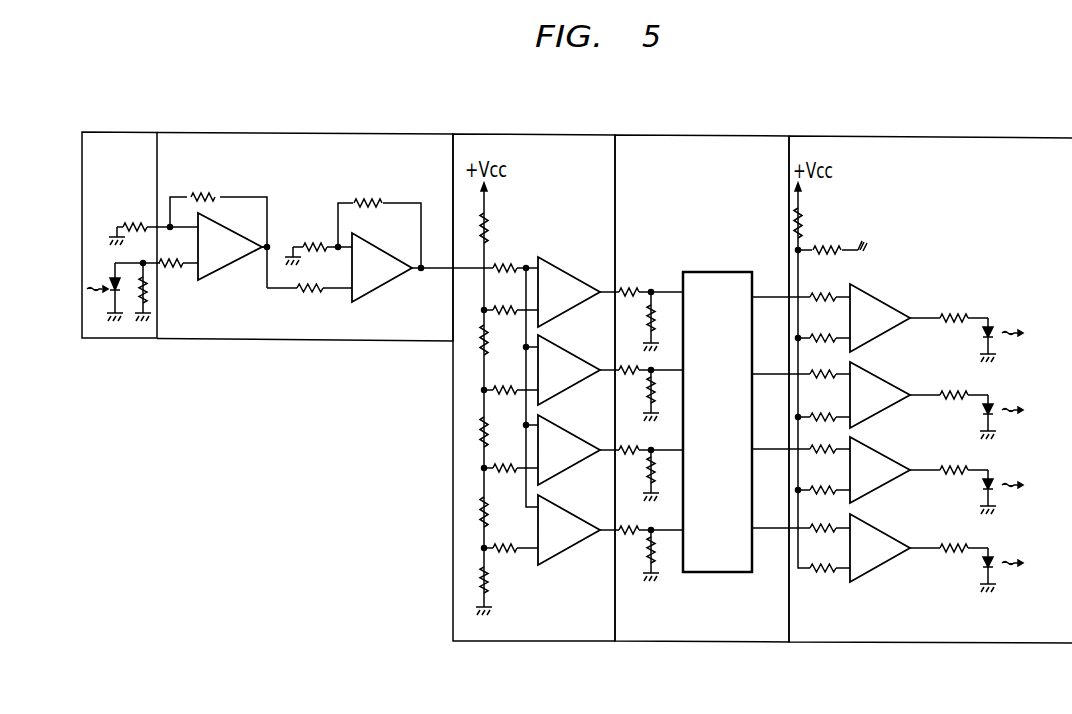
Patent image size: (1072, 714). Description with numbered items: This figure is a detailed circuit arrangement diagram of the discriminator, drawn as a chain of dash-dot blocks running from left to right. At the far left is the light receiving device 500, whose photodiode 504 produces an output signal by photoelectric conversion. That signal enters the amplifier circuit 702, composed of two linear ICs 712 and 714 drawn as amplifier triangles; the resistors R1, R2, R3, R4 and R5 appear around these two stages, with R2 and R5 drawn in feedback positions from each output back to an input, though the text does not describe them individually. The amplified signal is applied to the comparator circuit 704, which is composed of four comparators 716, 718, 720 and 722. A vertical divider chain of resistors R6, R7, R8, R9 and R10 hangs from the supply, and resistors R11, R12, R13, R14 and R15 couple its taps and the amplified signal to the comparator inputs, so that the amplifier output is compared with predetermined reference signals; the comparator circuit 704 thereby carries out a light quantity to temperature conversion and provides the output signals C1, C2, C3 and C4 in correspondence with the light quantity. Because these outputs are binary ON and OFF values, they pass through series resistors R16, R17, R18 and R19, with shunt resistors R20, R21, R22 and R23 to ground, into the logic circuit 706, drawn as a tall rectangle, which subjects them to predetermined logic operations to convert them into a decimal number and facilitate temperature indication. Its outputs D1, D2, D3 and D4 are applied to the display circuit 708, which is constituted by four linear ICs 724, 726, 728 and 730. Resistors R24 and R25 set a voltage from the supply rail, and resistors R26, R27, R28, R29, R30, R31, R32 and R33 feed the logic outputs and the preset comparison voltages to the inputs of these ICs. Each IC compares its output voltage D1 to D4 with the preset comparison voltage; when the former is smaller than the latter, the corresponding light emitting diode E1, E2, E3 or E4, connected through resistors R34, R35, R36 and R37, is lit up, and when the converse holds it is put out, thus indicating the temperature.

The light receiving device 500 is at (113, 132).
The photodiode 504 is at (113, 284).
The amplifier circuit 702 is at (342, 132).
The comparator circuit 704 is at (553, 133).
The logic circuit 706 is at (708, 133).
The display circuit 708 is at (939, 137).
The linear IC 712 is at (220, 269).
The linear IC 714 is at (366, 292).
The comparator 716 is at (568, 271).
The comparator 718 is at (575, 354).
The comparator 720 is at (572, 431).
The comparator 722 is at (570, 512).
The linear IC 724 is at (880, 300).
The linear IC 726 is at (874, 385).
The linear IC 728 is at (867, 457).
The linear IC 730 is at (871, 539).
The resistor R1 is at (169, 268).
The feedback resistor R2 is at (196, 193).
The resistor R3 is at (305, 294).
The resistor R4 is at (318, 240).
The feedback resistor R5 is at (365, 193).
The divider resistor R6 is at (489, 213).
The divider resistor R7 is at (480, 342).
The divider resistor R8 is at (480, 430).
The divider resistor R9 is at (480, 510).
The divider resistor R10 is at (478, 574).
The input resistor R11 is at (505, 265).
The input resistor R12 is at (504, 307).
The input resistor R13 is at (504, 386).
The input resistor R14 is at (506, 463).
The input resistor R15 is at (506, 543).
The series resistor R16 is at (629, 285).
The series resistor R17 is at (626, 365).
The series resistor R18 is at (626, 445).
The series resistor R19 is at (626, 525).
The shunt resistor R20 is at (656, 304).
The shunt resistor R21 is at (654, 400).
The shunt resistor R22 is at (654, 456).
The shunt resistor R23 is at (656, 551).
The bias resistor R24 is at (802, 210).
The bias resistor R25 is at (822, 245).
The input resistor R26 is at (815, 293).
The input resistor R27 is at (809, 335).
The input resistor R28 is at (809, 372).
The input resistor R29 is at (809, 413).
The input resistor R30 is at (812, 441).
The input resistor R31 is at (809, 488).
The input resistor R32 is at (809, 526).
The input resistor R33 is at (809, 566).
The output resistor R34 is at (953, 315).
The output resistor R35 is at (946, 392).
The output resistor R36 is at (944, 467).
The output resistor R37 is at (950, 545).
The comparator output signal C1 is at (602, 289).
The comparator output signal C2 is at (601, 368).
The comparator output signal C3 is at (599, 448).
The comparator output signal C4 is at (601, 528).
The logic circuit output signal D1 is at (768, 296).
The logic circuit output signal D2 is at (768, 373).
The logic circuit output signal D3 is at (768, 448).
The logic circuit output signal D4 is at (768, 527).
The light emitting diode E1 is at (1018, 340).
The light emitting diode E2 is at (1019, 417).
The light emitting diode E3 is at (1020, 492).
The light emitting diode E4 is at (1019, 570).